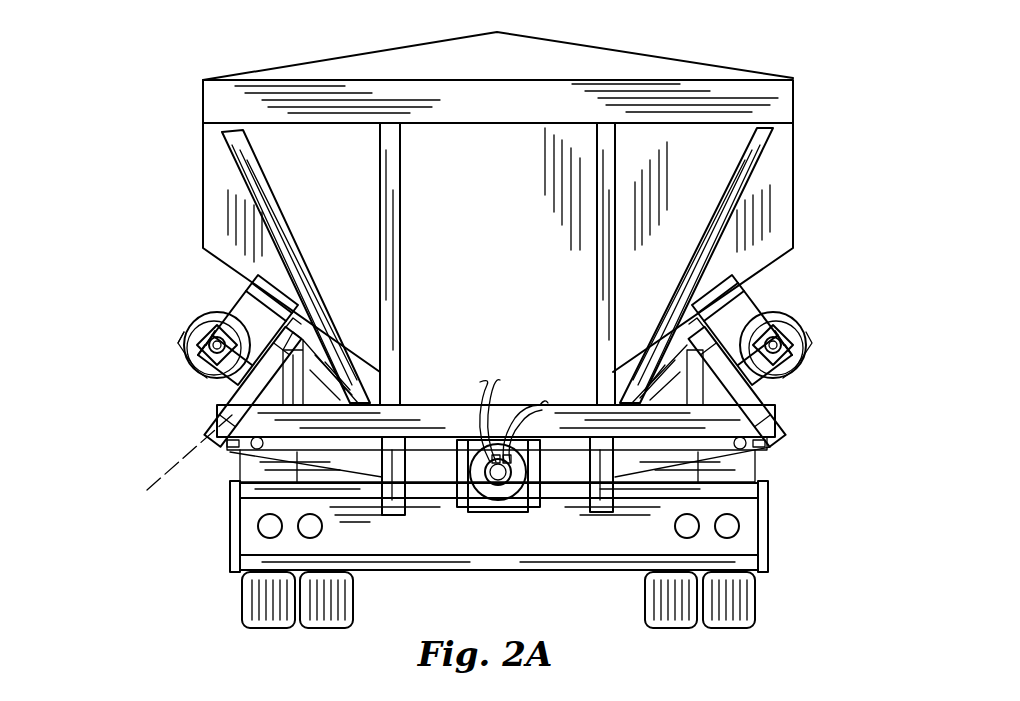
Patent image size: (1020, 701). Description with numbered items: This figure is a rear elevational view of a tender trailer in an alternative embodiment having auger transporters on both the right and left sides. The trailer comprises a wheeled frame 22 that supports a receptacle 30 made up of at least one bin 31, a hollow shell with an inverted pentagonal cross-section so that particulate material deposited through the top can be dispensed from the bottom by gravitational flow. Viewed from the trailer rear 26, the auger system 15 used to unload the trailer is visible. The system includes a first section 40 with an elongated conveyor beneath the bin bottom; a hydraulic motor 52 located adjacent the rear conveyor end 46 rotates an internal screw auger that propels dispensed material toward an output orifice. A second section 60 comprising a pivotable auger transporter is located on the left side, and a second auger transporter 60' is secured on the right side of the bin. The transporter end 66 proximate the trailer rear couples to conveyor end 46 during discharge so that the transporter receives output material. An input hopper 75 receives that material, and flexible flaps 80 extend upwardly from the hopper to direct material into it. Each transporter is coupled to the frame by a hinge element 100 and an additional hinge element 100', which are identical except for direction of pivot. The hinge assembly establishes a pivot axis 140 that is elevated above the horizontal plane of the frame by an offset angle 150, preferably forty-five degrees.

The auger system 15 is at (155, 397).
The wheeled frame 22 is at (435, 412).
The trailer rear 26 is at (228, 537).
The bin 30 is at (179, 89).
The bin 31 is at (778, 178).
The first section 40 is at (498, 425).
The conveyor end 46 is at (452, 458).
The hydraulic motor 52 is at (500, 493).
The second section 60 is at (206, 296).
The second auger transporter 60' is at (808, 330).
The auger transporter end 66 is at (187, 345).
The input hopper 75 is at (230, 303).
The flexible flaps 80 is at (265, 270).
The hinge element 100 is at (379, 307).
The additional hinge element 100' is at (805, 382).
The pivot axis 140 is at (157, 473).
The offset angle 150 is at (223, 407).